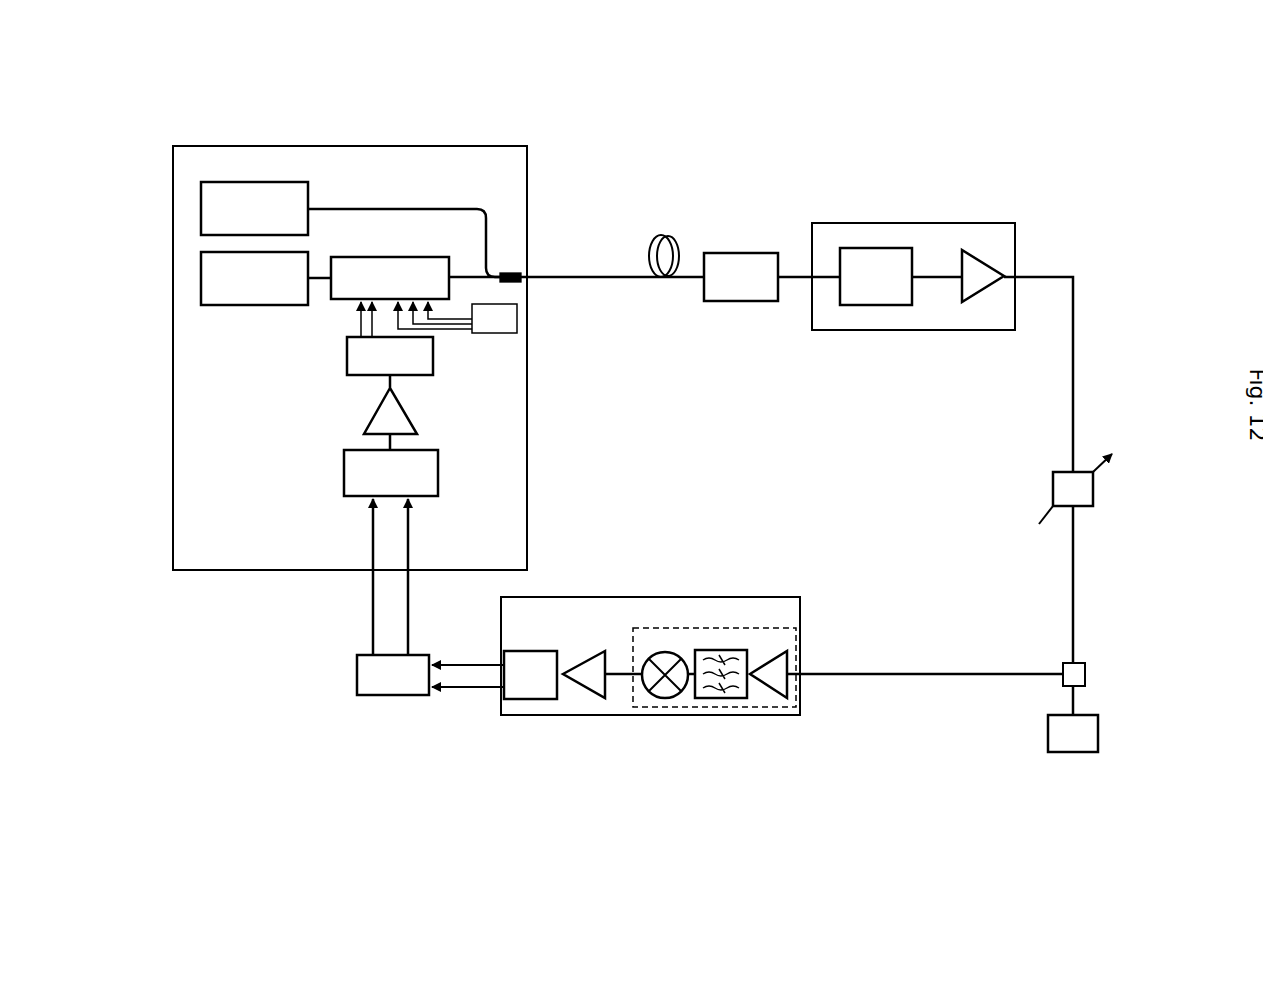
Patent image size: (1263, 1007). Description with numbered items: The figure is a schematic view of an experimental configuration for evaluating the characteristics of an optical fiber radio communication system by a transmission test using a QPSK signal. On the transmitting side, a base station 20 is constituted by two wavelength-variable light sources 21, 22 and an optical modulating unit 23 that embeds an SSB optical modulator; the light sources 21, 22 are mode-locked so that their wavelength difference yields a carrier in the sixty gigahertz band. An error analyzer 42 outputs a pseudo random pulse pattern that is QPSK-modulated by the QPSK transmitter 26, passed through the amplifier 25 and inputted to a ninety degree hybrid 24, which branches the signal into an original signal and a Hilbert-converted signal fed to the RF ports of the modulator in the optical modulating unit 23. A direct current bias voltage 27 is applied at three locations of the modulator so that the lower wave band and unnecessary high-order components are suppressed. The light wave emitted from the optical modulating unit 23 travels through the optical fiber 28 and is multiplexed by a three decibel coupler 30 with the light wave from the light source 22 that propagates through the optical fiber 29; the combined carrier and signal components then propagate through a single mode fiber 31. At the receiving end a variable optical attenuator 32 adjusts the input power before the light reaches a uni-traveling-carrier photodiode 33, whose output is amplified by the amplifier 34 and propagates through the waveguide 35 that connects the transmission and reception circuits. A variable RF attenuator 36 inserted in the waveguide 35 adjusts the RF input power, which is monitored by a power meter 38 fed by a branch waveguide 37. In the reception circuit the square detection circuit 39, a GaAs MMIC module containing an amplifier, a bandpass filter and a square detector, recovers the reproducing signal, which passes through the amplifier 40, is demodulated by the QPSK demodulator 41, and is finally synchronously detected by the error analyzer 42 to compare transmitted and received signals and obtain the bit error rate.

The base station 20 is at (257, 146).
The light source 21 is at (218, 307).
The light source 22 is at (290, 182).
The optical modulating unit 23 is at (331, 300).
The 90 degree hybrid 24 is at (348, 377).
The amplifier 25 is at (390, 418).
The QPSK transmitter 26 is at (438, 465).
The direct current bias voltage 27 is at (517, 322).
The optical fiber 28 is at (473, 278).
The optical fiber 29 is at (427, 208).
The 3 dB coupler 30 is at (522, 273).
The single mode fiber 31 is at (677, 243).
The variable optical attenuator 32 is at (758, 301).
The uni-traveling-carrier photodiode 33 is at (887, 235).
The amplifier 34 is at (977, 275).
The waveguide 35 is at (1072, 372).
The variable RF attenuator 36 is at (1055, 494).
The branch waveguide 37 is at (1077, 677).
The power meter 38 is at (1087, 743).
The square detection circuit 39 is at (710, 697).
The amplifier 40 is at (578, 687).
The QPSK demodulator 41 is at (518, 702).
The error analyzer 42 is at (373, 695).